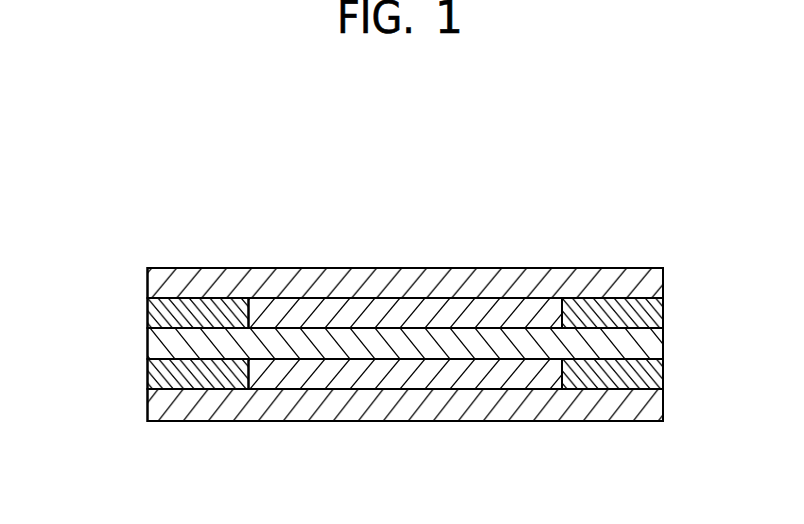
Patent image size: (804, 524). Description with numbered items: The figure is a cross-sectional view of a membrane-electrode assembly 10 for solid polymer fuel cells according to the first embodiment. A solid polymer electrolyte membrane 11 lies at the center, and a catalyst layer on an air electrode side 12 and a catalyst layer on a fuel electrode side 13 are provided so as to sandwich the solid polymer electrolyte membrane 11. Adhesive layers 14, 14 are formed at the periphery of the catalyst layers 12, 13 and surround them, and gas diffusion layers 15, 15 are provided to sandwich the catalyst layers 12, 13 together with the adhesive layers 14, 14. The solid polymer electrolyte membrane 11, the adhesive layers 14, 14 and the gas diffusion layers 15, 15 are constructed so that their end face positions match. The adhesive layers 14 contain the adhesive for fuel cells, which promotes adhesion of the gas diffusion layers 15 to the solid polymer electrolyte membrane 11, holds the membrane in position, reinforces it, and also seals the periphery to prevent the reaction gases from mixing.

The membrane-electrode assembly 10 is at (500, 156).
The solid polymer electrolyte membrane 11 is at (647, 343).
The catalyst layer on an air electrode side 12 is at (538, 315).
The catalyst layer on a fuel electrode side 13 is at (497, 373).
The adhesive layer 14 is at (148, 322).
The gas diffusion layer 15 is at (645, 287).